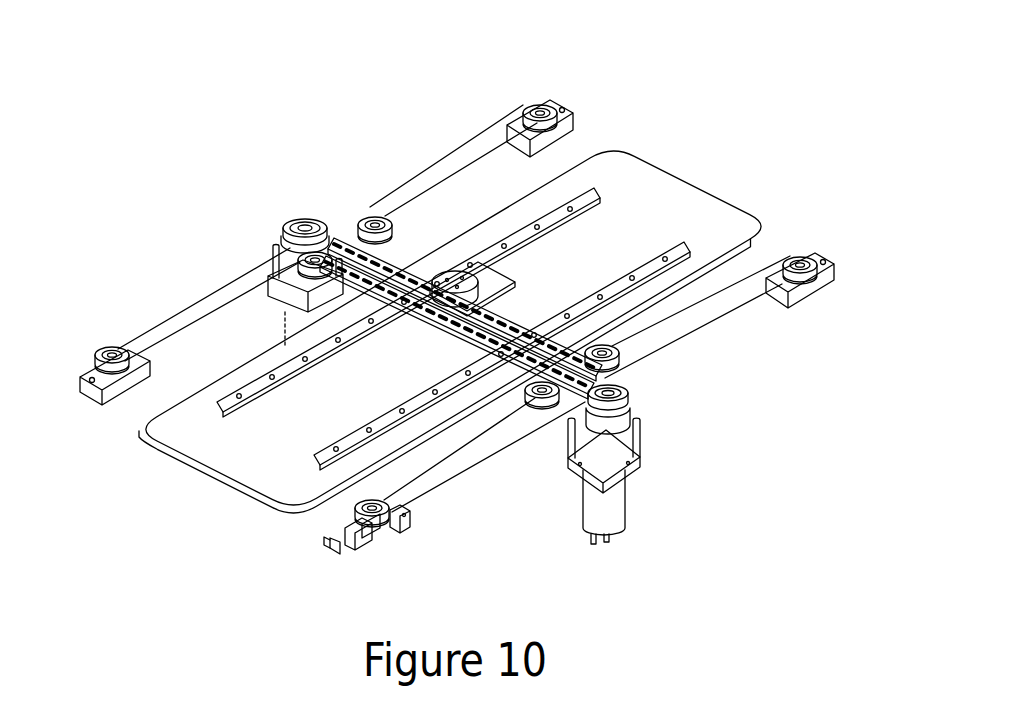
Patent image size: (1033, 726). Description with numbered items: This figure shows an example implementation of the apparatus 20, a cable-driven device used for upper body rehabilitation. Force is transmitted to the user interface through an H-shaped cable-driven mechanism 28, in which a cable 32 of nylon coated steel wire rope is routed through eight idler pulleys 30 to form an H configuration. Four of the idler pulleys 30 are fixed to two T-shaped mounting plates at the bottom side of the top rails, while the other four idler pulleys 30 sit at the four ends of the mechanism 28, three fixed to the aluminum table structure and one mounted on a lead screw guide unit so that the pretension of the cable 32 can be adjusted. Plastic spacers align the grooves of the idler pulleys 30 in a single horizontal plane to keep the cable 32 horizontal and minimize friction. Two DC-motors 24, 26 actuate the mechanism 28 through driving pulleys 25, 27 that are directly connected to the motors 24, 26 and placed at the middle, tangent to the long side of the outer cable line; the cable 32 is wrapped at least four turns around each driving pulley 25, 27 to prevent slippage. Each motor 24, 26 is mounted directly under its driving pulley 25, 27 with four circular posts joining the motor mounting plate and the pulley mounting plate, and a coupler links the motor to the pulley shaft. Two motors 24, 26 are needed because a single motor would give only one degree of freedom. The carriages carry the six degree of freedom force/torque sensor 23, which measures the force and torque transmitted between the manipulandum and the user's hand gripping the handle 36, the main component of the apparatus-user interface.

The apparatus 20 is at (181, 201).
The six degree of freedom force/torque sensor 23 is at (490, 280).
The DC-motor 24 is at (307, 213).
The driving pulley 25 is at (287, 223).
The DC-motor 26 is at (628, 391).
The driving pulley 27 is at (628, 405).
The H-shaped cable-driven mechanism 28 is at (743, 310).
The idler pulley 30 is at (110, 345).
The cable 32 is at (462, 470).
The handle 36 is at (697, 185).